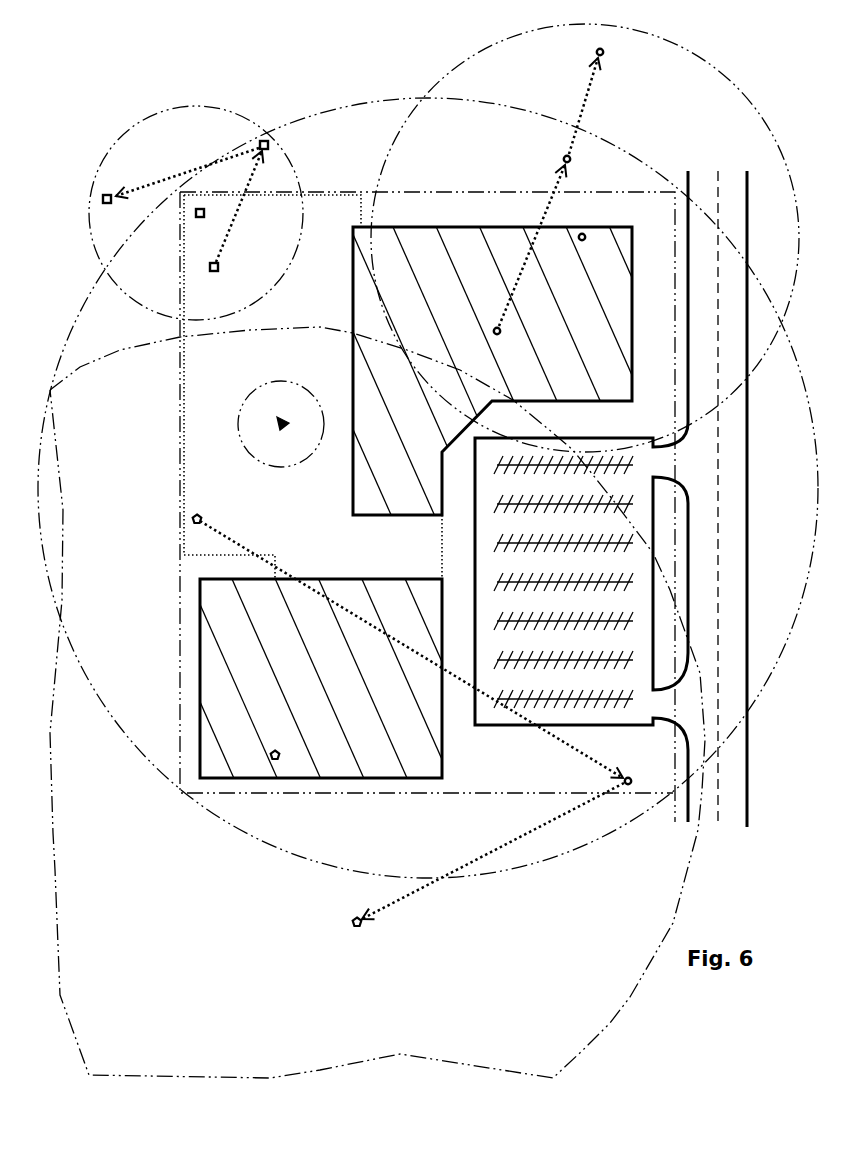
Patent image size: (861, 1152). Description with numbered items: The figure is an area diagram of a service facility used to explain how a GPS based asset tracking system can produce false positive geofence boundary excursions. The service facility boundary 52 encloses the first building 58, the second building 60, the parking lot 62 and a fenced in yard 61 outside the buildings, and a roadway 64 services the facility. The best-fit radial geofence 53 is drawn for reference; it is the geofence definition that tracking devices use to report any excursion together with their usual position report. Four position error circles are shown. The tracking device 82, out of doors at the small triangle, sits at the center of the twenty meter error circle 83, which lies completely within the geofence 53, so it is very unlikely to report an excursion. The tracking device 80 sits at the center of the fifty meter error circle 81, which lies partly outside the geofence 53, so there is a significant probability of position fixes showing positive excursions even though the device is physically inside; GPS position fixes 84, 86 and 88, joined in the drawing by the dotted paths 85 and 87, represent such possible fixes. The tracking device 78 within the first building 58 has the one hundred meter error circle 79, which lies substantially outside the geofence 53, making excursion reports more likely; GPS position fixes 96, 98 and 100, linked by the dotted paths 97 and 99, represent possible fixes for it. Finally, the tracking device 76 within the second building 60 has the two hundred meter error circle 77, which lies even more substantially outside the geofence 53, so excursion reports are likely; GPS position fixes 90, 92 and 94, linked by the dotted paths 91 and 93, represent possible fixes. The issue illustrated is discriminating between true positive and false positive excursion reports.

The service facility boundary 52 is at (178, 623).
The best-fit radial geofence 53 is at (133, 753).
The first building 58 is at (350, 300).
The second building 60 is at (380, 578).
The fenced in yard 61 is at (258, 555).
The parking lot 62 is at (513, 727).
The roadway 64 is at (748, 785).
The tracking device 76 is at (278, 750).
The error circle 77 is at (77, 377).
The tracking device 78 is at (582, 232).
The error circle 79 is at (745, 103).
The tracking device 80 is at (196, 213).
The error circle 81 is at (153, 113).
The tracking device 82 is at (279, 421).
The error circle 83 is at (243, 398).
The GPS position fix 84 is at (218, 272).
The first path segment 85 is at (235, 225).
The GPS position fix 86 is at (270, 146).
The second path segment 87 is at (200, 163).
The GPS position fix 88 is at (105, 204).
The GPS position fix 90 is at (196, 514).
The path segment 91 is at (346, 612).
The GPS position fix 92 is at (632, 777).
The path segment 93 is at (520, 838).
The GPS position fix 94 is at (356, 917).
The GPS position fix 96 is at (500, 335).
The path segment 97 is at (526, 260).
The GPS position fix 98 is at (565, 155).
The path segment 99 is at (585, 92).
The GPS position fix 100 is at (600, 48).